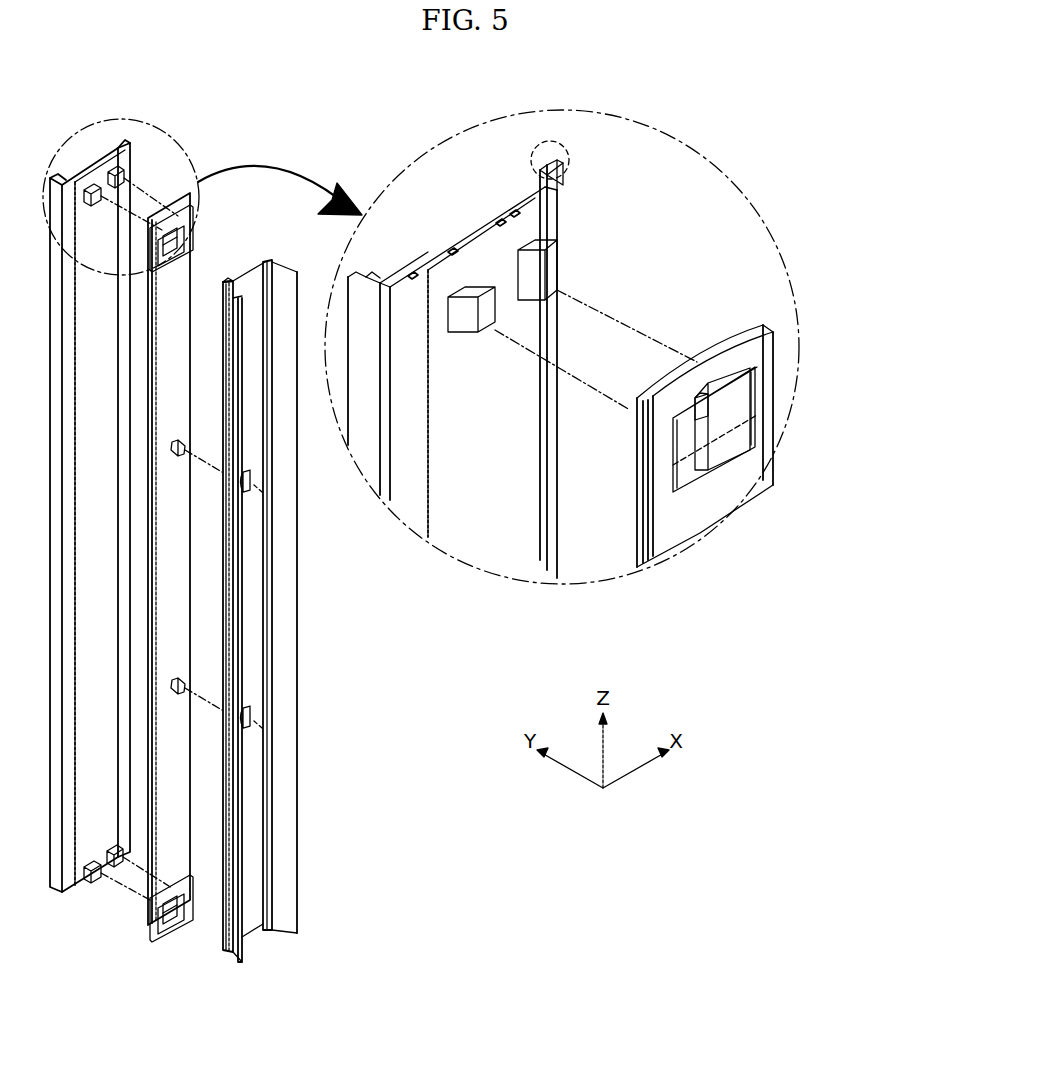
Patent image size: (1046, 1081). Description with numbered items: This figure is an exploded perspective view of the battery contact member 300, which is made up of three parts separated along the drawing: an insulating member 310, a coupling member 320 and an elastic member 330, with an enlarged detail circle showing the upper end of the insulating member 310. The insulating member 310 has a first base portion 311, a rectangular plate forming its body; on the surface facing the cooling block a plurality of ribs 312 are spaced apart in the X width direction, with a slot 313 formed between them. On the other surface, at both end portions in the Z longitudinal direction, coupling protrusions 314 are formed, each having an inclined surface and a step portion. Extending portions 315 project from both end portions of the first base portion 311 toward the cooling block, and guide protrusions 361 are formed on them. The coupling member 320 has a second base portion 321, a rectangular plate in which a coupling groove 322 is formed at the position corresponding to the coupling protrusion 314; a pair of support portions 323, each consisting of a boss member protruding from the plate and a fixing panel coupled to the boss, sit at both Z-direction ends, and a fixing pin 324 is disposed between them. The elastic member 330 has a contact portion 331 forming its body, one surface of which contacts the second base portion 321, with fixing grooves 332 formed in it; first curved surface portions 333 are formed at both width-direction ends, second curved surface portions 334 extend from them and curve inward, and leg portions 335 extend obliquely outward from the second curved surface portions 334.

The battery contact member 300 is at (307, 81).
The insulating member 310 is at (137, 163).
The first base portion 311 is at (510, 530).
The ribs 312 is at (450, 246).
The slot 313 is at (512, 214).
The coupling protrusion 314 is at (826, 162).
The extending portion 315 is at (582, 180).
The coupling member 320 is at (147, 928).
The second base portion 321 is at (717, 492).
The coupling groove 322 is at (692, 450).
The support portion 323 is at (786, 434).
The fixing pin 324 is at (187, 446).
The elastic member 330 is at (293, 615).
The contact portion 331 is at (247, 934).
The fixing groove 332 is at (252, 482).
The first curved surface portion 333 is at (268, 262).
The second curved surface portion 334 is at (229, 279).
The leg portion 335 is at (233, 955).
The guide protrusion 361 is at (565, 148).